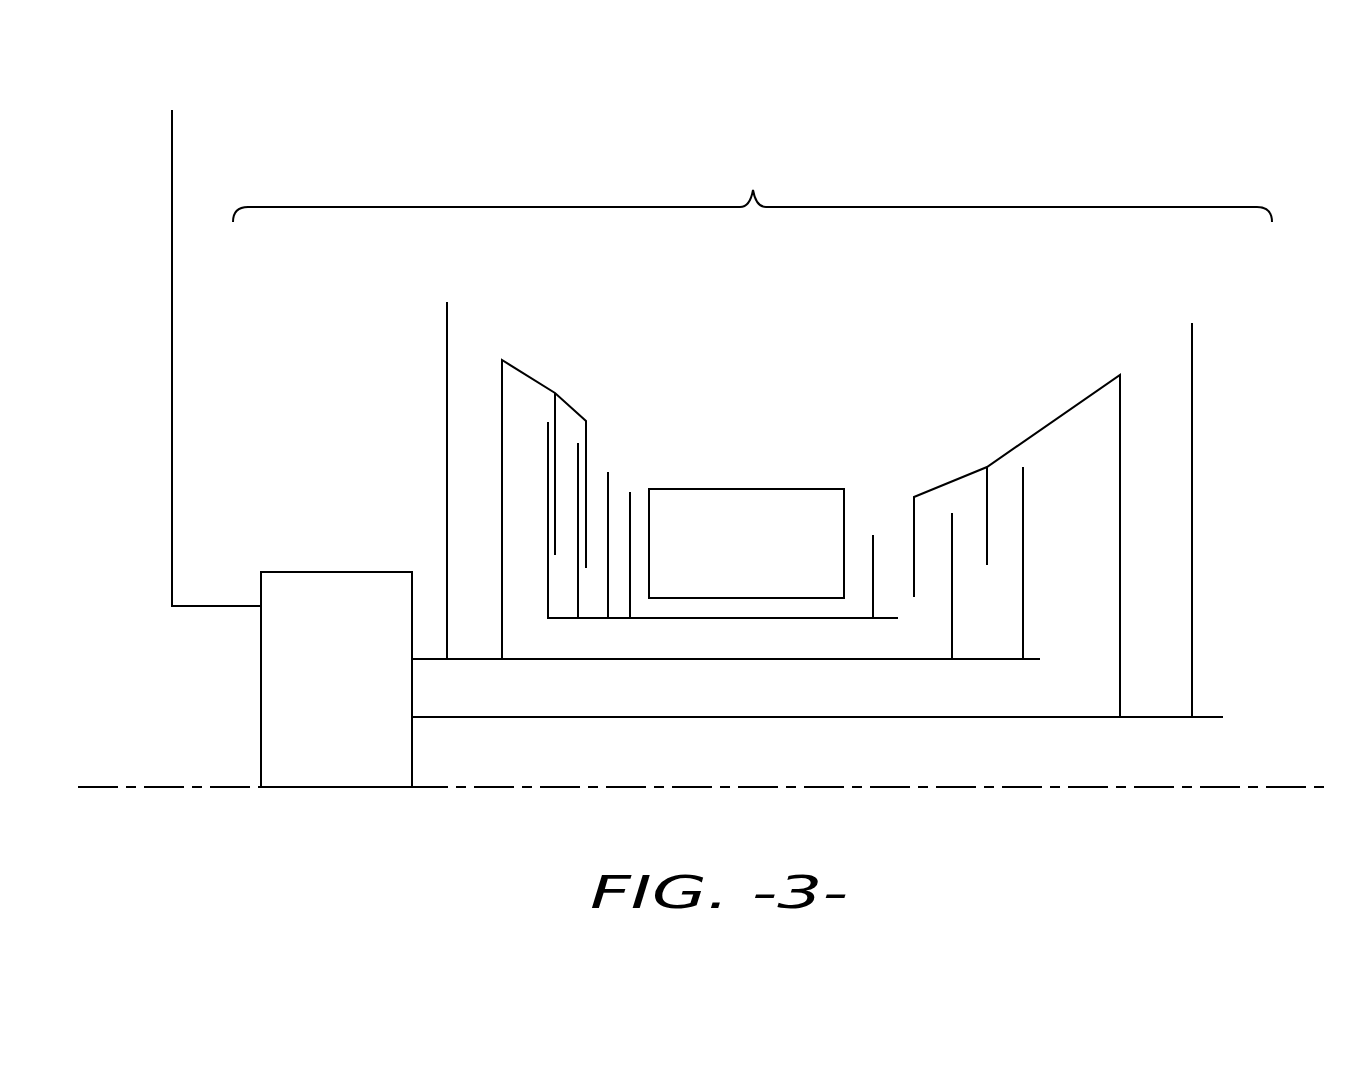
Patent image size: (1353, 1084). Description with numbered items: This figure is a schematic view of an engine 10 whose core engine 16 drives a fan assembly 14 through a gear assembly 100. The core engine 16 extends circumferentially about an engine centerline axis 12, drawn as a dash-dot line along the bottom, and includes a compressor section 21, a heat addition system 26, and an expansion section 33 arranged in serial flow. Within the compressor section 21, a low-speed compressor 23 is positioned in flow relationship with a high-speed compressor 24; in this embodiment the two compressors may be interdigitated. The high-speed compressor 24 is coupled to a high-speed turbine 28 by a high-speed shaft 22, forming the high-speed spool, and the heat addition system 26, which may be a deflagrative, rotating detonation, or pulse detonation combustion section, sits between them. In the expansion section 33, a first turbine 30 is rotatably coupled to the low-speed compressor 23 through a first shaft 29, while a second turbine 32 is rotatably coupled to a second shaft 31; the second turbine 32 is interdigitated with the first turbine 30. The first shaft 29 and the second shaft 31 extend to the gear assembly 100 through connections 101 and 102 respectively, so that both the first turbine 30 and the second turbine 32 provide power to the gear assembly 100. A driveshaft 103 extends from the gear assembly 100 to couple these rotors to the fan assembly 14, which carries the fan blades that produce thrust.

The engine 10 is at (897, 144).
The engine centerline axis 12 is at (172, 790).
The fan assembly 14 is at (186, 196).
The core engine 16 is at (752, 189).
The compressor section 21 is at (583, 344).
The high-speed shaft 22 is at (752, 620).
The low-speed compressor 23 is at (479, 327).
The high-speed compressor 24 is at (606, 454).
The heat addition system 26 is at (763, 558).
The high-speed turbine 28 is at (870, 491).
The first shaft 29 is at (710, 660).
The first turbine 30 is at (1046, 547).
The second shaft 31 is at (623, 718).
The second turbine 32 is at (1141, 489).
The expansion section 33 is at (1031, 339).
The gear assembly 100 is at (360, 698).
The first connection 101 is at (430, 660).
The second connection 102 is at (445, 718).
The driveshaft 103 is at (196, 604).